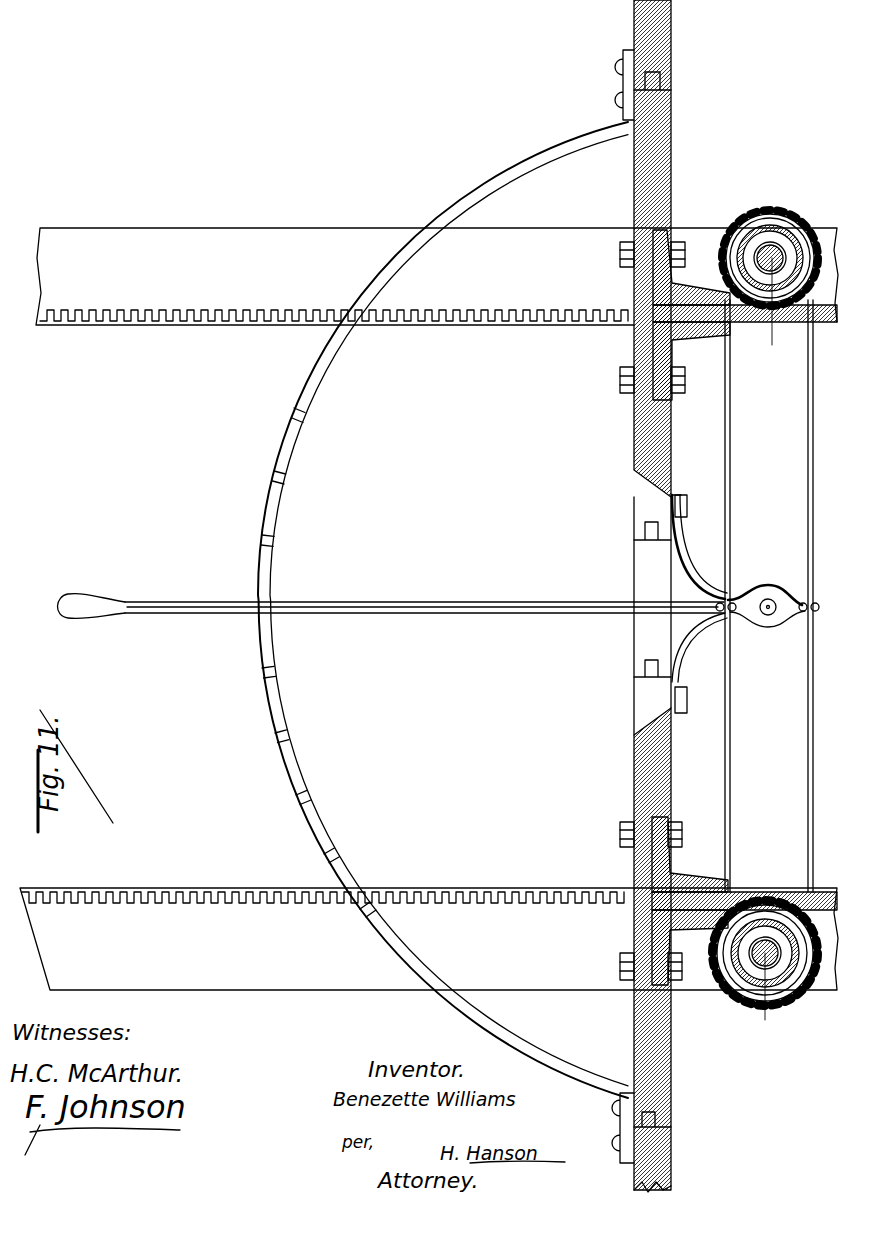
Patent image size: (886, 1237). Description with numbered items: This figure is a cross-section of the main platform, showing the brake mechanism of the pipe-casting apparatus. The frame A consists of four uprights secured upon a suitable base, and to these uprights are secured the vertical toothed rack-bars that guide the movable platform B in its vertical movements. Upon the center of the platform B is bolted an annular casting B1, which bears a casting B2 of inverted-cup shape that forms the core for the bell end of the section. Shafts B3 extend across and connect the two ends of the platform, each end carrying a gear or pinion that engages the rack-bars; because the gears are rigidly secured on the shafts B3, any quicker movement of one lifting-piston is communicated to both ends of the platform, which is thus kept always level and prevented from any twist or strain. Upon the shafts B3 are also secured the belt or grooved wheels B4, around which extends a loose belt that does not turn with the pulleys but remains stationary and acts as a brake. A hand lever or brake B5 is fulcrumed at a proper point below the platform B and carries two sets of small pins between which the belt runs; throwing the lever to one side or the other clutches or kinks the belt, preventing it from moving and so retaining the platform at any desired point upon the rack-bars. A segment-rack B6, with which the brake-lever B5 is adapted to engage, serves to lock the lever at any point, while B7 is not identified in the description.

The frame A is at (429, 609).
The movable platform B is at (641, 461).
The annular casting B1 is at (718, 190).
The casting of inverted-cup shape B2 is at (456, 309).
The shafts B3 is at (765, 931).
The belt or grooved wheels B4 is at (802, 613).
The hand lever or brake B5 is at (462, 601).
The segment-rack B6 is at (302, 420).
The lower pawl arm B7 is at (722, 617).